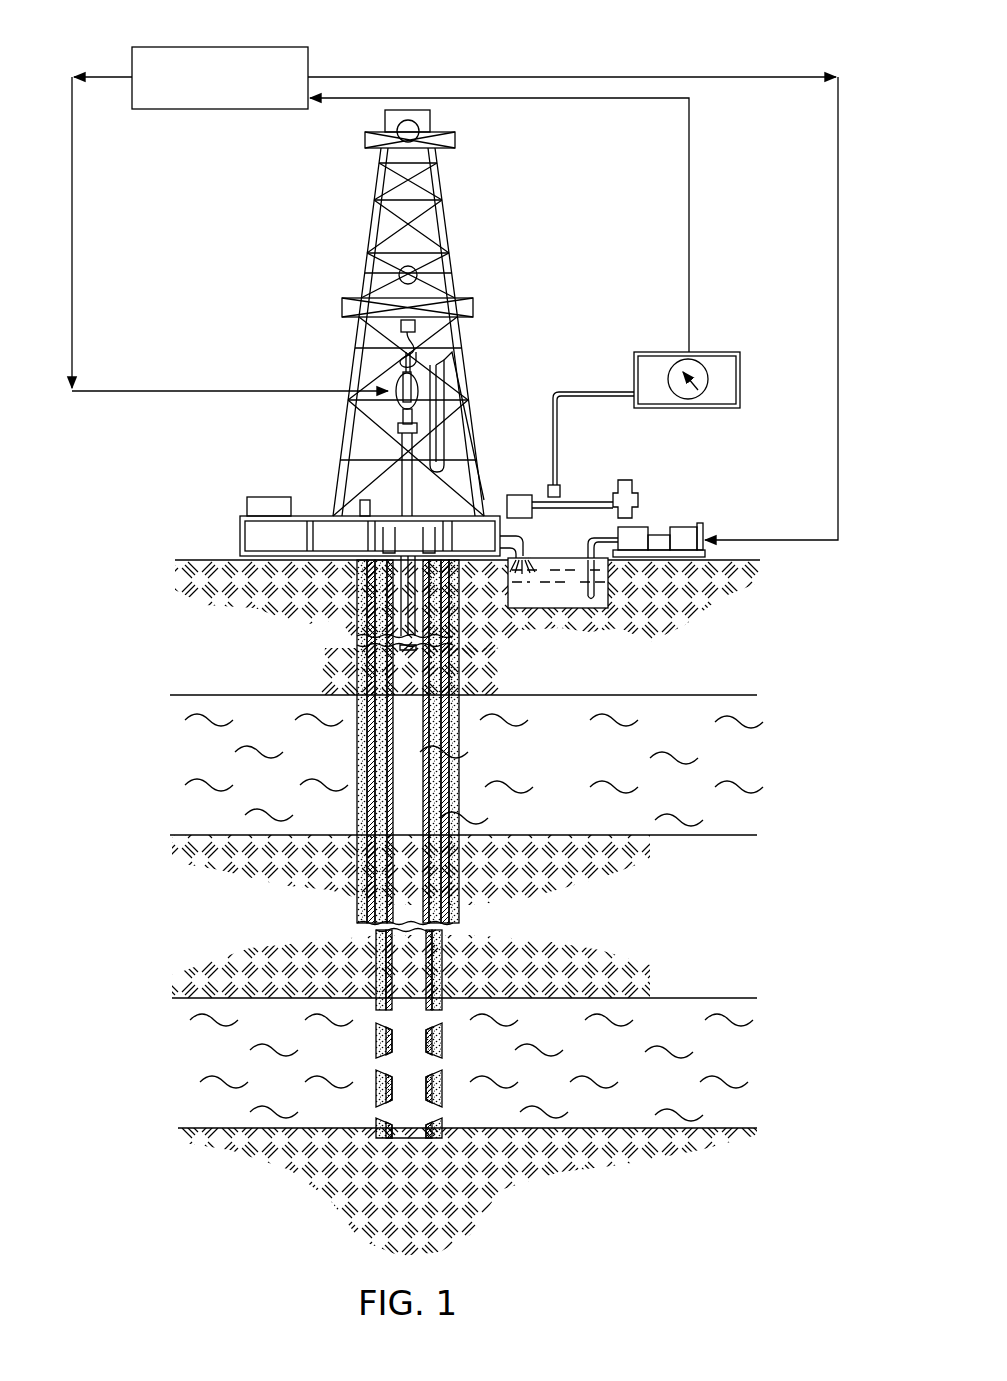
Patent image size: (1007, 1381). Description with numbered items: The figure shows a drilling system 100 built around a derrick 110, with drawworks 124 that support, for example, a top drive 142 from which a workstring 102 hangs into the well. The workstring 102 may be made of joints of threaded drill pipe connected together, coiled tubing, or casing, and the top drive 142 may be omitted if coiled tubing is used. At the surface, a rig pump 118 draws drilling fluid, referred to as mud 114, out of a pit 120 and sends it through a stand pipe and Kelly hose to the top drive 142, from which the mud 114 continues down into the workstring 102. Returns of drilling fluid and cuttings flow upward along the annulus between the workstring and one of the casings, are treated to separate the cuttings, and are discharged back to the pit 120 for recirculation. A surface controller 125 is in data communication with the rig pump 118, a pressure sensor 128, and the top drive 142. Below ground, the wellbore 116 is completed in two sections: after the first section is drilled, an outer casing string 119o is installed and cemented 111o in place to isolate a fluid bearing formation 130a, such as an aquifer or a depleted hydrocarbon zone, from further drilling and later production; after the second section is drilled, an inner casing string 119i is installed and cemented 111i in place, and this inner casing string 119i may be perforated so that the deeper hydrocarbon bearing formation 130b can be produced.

The drilling system 100 is at (757, 46).
The workstring 102 is at (400, 490).
The derrick 110 is at (379, 200).
The inner cement 111i is at (378, 942).
The outer cement 111o is at (458, 628).
The mud 114 is at (563, 572).
The wellbore 116 is at (452, 1138).
The rig pump 118 is at (668, 500).
The inner casing string 119i is at (381, 620).
The outer casing string 119o is at (456, 930).
The pit 120 is at (590, 626).
The drawworks 124 is at (290, 497).
The surface controller 125 is at (241, 110).
The pressure sensor 128 is at (703, 352).
The fluid bearing formation 130a is at (846, 771).
The hydrocarbon bearing formation 130b is at (841, 1067).
The top drive 142 is at (398, 372).